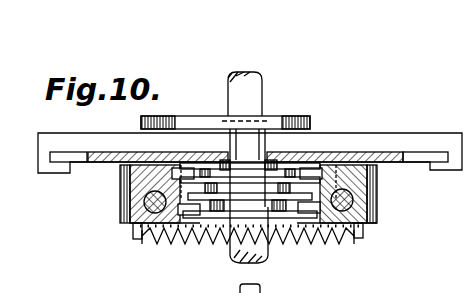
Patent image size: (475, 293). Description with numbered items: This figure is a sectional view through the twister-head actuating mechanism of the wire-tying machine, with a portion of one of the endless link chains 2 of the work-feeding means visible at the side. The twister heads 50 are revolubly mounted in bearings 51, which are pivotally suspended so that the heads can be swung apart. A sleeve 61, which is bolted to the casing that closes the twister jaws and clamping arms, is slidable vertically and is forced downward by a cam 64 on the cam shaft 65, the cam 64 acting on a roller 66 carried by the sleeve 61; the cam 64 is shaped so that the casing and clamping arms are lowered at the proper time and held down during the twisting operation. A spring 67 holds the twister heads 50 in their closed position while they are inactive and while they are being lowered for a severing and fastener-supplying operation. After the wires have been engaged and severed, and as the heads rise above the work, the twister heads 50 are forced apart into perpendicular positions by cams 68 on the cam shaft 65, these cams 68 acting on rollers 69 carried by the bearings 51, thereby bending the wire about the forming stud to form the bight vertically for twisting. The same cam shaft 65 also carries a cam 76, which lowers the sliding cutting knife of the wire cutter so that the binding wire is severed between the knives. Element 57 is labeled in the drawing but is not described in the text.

The endless link chains 2 is at (7, 128).
The twister heads 50 is at (144, 206).
The bearings 51 is at (125, 183).
The bracket 57 is at (233, 288).
The sleeve 61 is at (440, 122).
The cam 64 is at (199, 122).
The cam shaft 65 is at (255, 93).
The roller 66 is at (270, 123).
The spring 67 is at (153, 247).
The cams 68 is at (212, 165).
The rollers 69 is at (180, 168).
The cam 76 is at (248, 207).